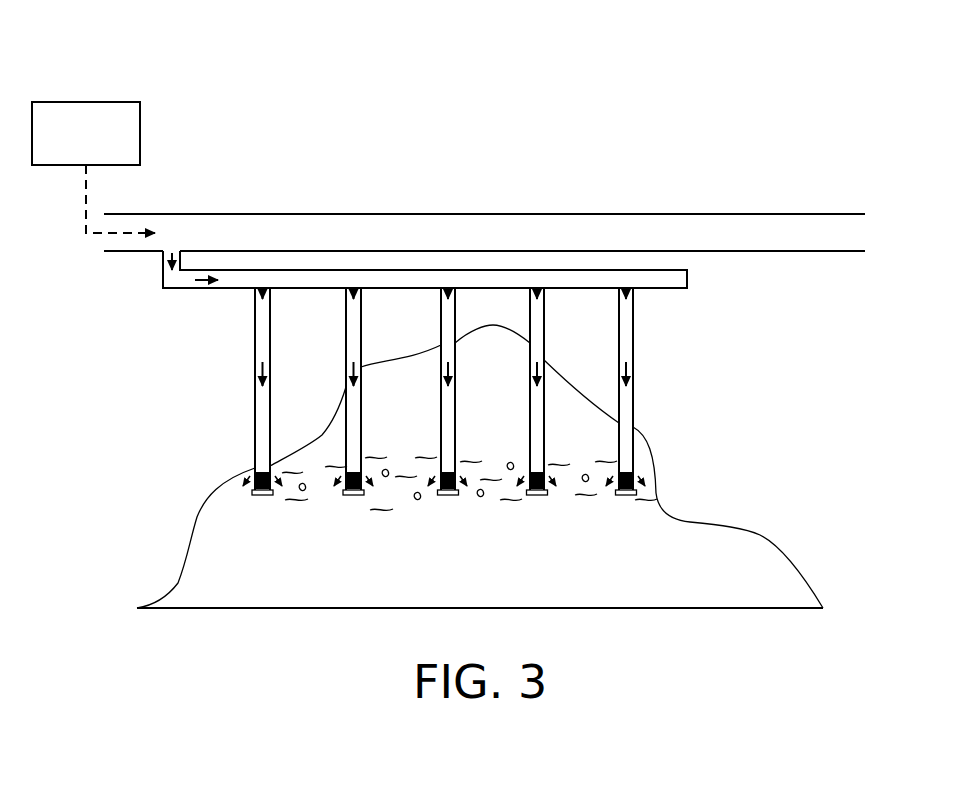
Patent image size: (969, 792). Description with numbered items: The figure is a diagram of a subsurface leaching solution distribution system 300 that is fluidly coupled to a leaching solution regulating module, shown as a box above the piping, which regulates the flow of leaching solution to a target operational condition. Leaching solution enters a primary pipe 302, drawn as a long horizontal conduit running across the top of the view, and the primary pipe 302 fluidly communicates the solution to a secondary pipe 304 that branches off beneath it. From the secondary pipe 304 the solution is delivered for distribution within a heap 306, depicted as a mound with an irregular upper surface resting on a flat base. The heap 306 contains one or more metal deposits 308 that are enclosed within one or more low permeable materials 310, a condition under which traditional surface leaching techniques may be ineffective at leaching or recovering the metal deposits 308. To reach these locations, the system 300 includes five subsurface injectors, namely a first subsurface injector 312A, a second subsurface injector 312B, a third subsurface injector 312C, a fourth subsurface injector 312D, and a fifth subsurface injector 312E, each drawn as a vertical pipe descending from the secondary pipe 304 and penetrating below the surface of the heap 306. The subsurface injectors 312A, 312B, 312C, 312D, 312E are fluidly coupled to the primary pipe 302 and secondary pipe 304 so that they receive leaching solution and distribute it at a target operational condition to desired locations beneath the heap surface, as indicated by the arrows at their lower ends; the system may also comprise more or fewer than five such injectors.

The subsurface leaching solution distribution system 300 is at (144, 68).
The primary pipe 302 is at (572, 214).
The secondary pipe 304 is at (163, 283).
The heap 306 is at (190, 537).
The metal deposits 308 is at (417, 501).
The low permeable materials 310 is at (366, 456).
The first subsurface injector 312A is at (255, 320).
The second subsurface injector 312B is at (346, 318).
The third subsurface injector 312C is at (441, 320).
The fourth subsurface injector 312D is at (530, 296).
The fifth subsurface injector 312E is at (619, 320).